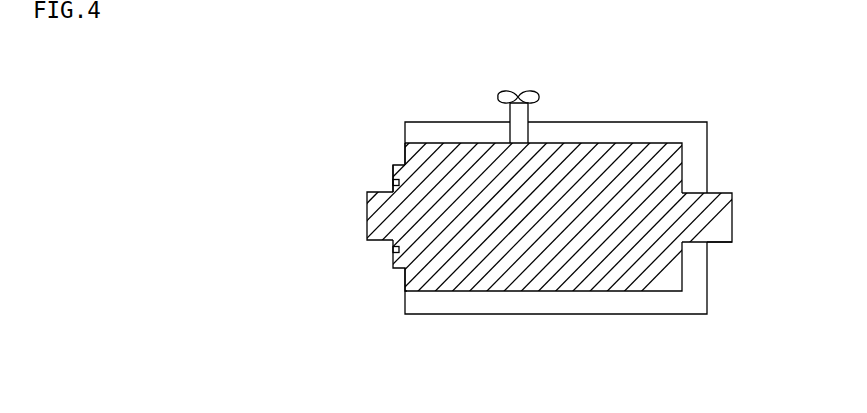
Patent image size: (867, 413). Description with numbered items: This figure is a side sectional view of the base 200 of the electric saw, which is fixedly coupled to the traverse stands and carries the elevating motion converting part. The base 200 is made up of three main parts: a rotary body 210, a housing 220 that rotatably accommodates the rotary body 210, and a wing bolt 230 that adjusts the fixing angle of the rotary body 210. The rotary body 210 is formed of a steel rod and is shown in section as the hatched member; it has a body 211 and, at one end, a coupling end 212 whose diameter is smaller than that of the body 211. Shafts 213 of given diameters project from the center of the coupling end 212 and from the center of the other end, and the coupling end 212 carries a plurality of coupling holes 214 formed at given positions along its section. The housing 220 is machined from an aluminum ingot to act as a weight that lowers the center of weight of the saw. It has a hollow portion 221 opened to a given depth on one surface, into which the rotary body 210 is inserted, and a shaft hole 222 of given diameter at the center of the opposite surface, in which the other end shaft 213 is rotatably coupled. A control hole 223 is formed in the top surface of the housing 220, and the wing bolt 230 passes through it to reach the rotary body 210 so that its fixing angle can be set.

The base 200 is at (368, 72).
The rotary body 210 is at (320, 115).
The body 211 is at (405, 152).
The coupling end 212 is at (393, 170).
The shafts 213 is at (373, 208).
The coupling holes 214 is at (395, 185).
The housing 220 is at (530, 302).
The hollow portion 221 is at (405, 288).
The shaft hole 222 is at (707, 243).
The control hole 223 is at (530, 113).
The wing bolt 230 is at (532, 92).